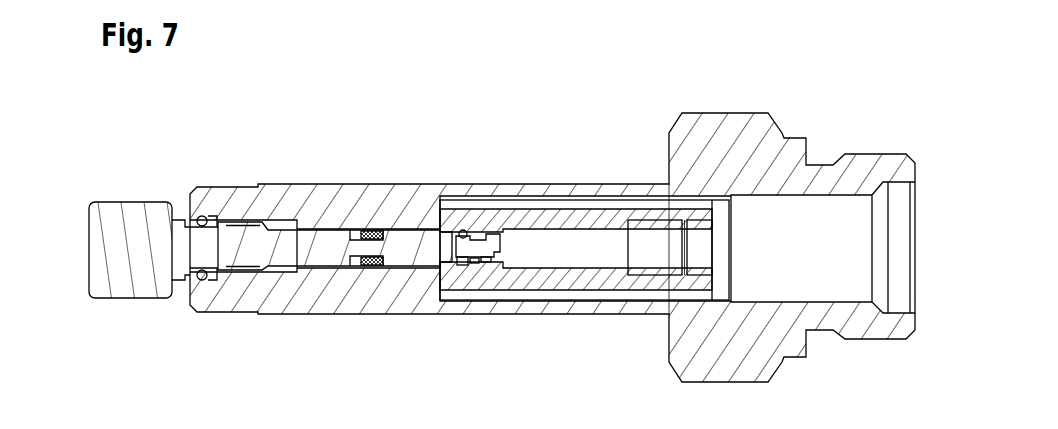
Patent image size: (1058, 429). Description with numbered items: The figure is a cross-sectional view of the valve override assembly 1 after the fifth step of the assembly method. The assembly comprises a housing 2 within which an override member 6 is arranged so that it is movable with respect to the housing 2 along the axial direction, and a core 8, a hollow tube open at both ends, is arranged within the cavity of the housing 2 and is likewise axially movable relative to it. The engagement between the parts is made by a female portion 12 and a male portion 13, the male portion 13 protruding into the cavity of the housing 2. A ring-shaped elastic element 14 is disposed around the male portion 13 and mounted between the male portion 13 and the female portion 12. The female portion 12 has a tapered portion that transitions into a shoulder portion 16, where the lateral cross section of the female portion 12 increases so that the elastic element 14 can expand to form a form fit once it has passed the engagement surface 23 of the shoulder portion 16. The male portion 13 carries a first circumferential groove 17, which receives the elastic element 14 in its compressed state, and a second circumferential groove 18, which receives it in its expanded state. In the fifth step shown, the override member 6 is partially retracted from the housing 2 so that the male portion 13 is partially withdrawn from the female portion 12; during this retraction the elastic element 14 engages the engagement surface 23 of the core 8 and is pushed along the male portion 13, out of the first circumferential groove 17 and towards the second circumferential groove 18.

The valve override assembly 1 is at (292, 124).
The housing 2 is at (572, 190).
The override member 6 is at (97, 248).
The core 8 is at (613, 212).
The female portion 12 is at (456, 228).
The male portion 13 is at (500, 236).
The elastic element 14 is at (474, 263).
The shoulder portion 16 is at (460, 265).
The first circumferential groove 17 is at (445, 254).
The second circumferential groove 18 is at (485, 260).
The engagement surface 23 is at (466, 230).